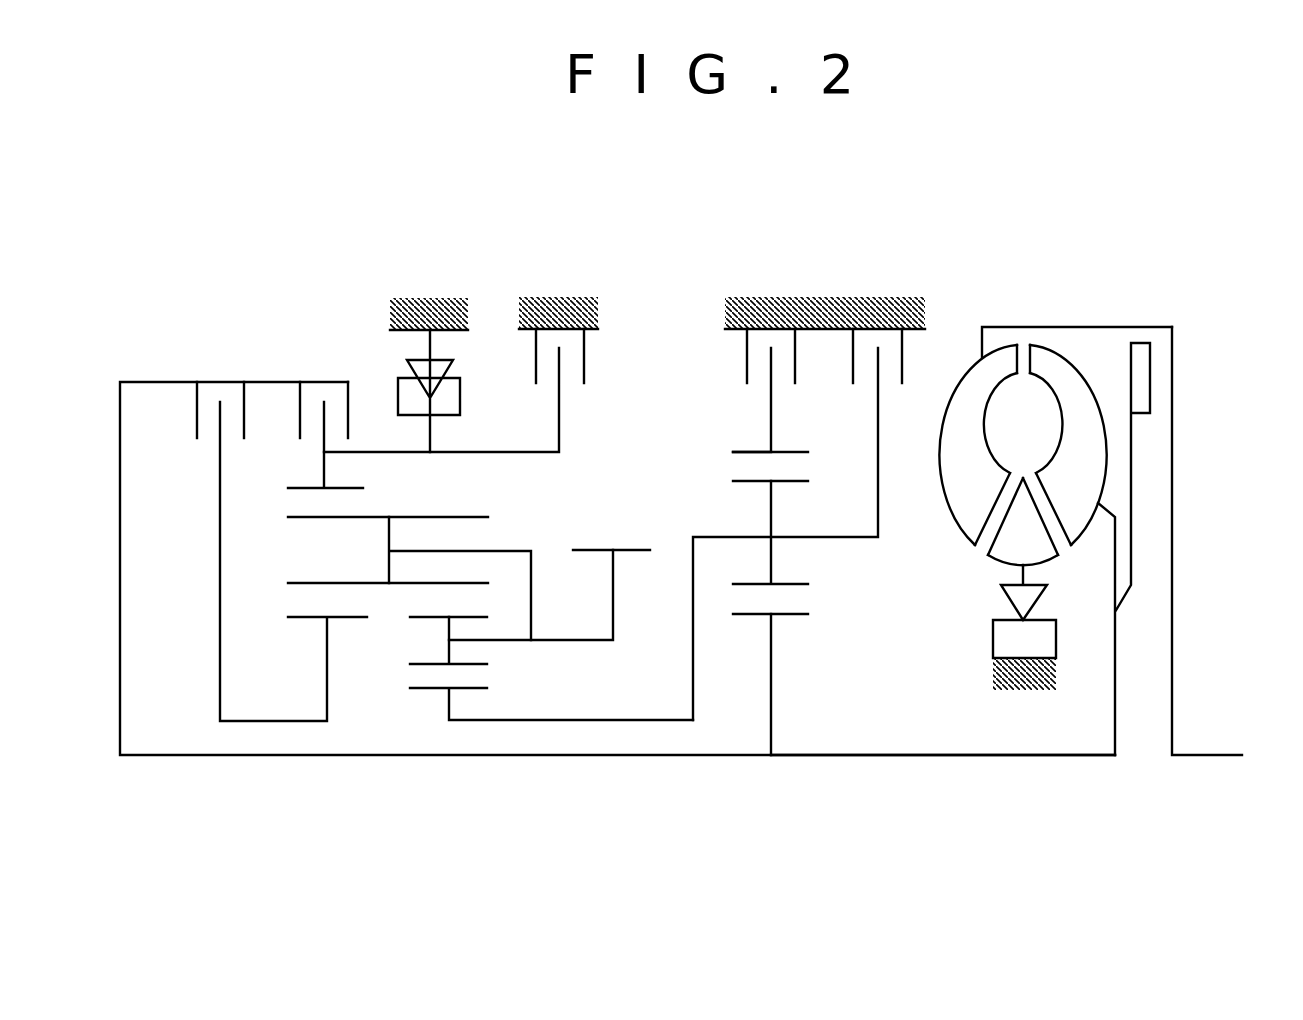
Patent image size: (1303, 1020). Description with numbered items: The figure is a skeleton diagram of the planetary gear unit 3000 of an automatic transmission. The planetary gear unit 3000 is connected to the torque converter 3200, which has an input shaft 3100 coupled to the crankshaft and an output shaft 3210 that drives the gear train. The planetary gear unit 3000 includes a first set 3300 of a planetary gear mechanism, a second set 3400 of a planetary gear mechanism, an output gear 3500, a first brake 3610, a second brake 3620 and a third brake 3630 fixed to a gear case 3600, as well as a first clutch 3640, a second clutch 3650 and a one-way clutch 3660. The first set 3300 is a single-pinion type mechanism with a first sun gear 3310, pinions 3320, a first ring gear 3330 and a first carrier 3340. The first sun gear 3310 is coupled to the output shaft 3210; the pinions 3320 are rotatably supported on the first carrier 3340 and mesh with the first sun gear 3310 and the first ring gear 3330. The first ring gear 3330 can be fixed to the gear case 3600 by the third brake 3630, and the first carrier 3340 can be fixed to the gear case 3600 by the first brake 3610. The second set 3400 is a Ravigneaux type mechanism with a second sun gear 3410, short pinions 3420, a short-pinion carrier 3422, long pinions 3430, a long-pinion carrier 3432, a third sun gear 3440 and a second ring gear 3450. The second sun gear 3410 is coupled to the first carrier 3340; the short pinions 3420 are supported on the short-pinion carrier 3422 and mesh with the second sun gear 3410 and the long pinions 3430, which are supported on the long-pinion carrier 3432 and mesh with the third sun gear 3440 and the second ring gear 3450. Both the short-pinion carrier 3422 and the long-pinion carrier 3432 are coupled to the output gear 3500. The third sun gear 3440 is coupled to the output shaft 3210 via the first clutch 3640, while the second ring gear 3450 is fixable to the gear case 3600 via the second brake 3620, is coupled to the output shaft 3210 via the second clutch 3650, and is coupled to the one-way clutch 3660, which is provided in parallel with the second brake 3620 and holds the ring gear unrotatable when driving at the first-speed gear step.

The planetary gear unit 3000 is at (659, 251).
The input shaft 3100 is at (1218, 757).
The torque converter 3200 is at (1037, 300).
The output shaft 3210 is at (930, 733).
The first set 3300 is at (827, 605).
The sun gear S(UD) 3310 is at (782, 650).
The pinions 3320 is at (806, 583).
The ring gear R(UD) 3330 is at (781, 448).
The carrier C(UD) 3340 is at (878, 498).
The second set 3400 is at (456, 632).
The sun gear S(D) 3410 is at (494, 688).
The short pinions 3420 is at (405, 623).
The carrier C(1) 3422 is at (510, 640).
The long pinions 3430 is at (488, 507).
The carrier C(2) 3432 is at (472, 551).
The sun gear S(S) 3440 is at (308, 623).
The ring gear R(1)(R(2)) 3450 is at (340, 473).
The output gear 3500 is at (663, 540).
The gear case 3600 is at (430, 298).
The B1 brake 3610 is at (897, 395).
The B2 brake 3620 is at (580, 384).
The B3 brake 3630 is at (735, 385).
The C1 clutch 3640 is at (190, 405).
The C2 clutch 3650 is at (292, 405).
The one-way clutch F 3660 is at (400, 368).